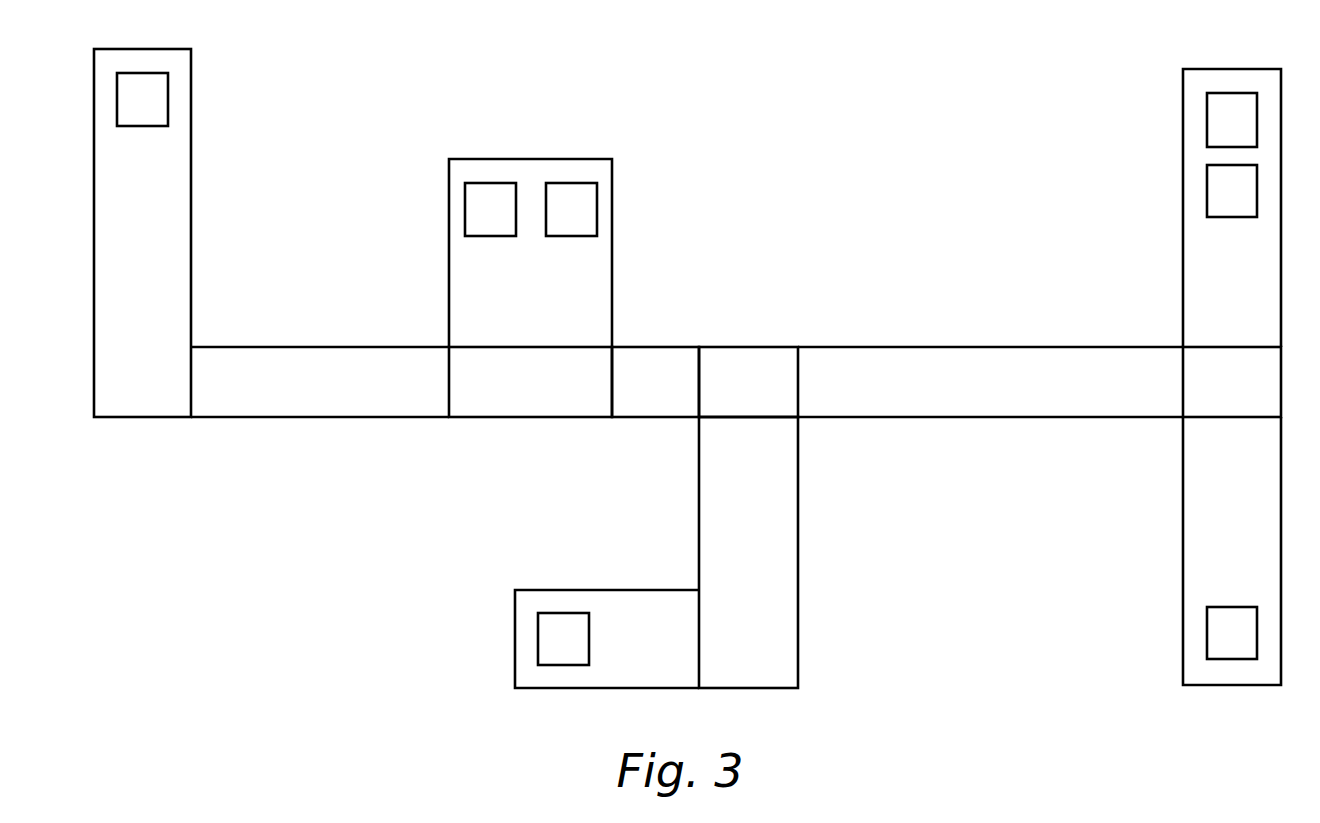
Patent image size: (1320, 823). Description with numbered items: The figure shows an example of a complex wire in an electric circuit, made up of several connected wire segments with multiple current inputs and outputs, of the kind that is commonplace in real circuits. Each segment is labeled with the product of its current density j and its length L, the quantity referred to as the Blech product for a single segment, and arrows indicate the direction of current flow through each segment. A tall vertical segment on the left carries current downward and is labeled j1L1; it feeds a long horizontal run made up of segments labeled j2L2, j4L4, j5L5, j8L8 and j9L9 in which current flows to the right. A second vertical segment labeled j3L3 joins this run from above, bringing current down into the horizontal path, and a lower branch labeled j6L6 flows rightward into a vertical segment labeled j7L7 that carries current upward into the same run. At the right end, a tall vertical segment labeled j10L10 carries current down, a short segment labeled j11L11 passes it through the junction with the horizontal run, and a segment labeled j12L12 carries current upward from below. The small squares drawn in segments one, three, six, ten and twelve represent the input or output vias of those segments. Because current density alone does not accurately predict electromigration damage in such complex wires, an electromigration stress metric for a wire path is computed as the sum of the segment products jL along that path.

The current density-length product of wire segment one j1L1 is at (142, 390).
The current density-length product of wire segment two j2L2 is at (353, 397).
The current density-length product of wire segment three j3L3 is at (530, 213).
The current density-length product of wire segment four j4L4 is at (567, 397).
The current density-length product of wire segment five j5L5 is at (677, 397).
The current density-length product of wire segment six j6L6 is at (683, 648).
The current density-length product of wire segment seven j7L7 is at (779, 662).
The current density-length product of wire segment eight j8L8 is at (772, 397).
The current density-length product of wire segment nine j9L9 is at (1033, 397).
The current density-length product of wire segment ten j10L10 is at (1232, 327).
The current density-length product of wire segment eleven j11L11 is at (1195, 353).
The current density-length product of wire segment twelve j12L12 is at (1232, 442).